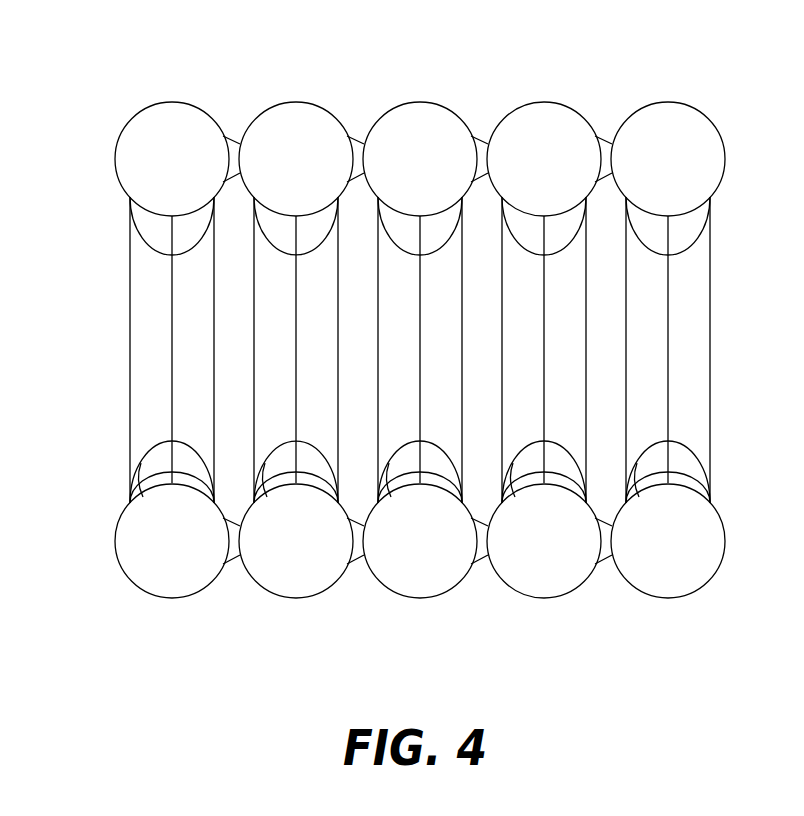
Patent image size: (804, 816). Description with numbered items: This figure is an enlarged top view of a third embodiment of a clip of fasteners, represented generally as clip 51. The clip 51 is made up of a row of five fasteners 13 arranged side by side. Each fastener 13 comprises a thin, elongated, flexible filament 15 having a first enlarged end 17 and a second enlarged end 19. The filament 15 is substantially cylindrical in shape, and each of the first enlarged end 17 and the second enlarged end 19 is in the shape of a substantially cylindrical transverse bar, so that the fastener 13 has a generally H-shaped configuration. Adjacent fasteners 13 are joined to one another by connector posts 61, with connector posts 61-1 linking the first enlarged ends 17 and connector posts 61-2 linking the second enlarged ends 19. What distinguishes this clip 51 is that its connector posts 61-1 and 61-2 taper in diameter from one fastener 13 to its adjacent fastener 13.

The fastener 13 is at (572, 92).
The filament 15 is at (140, 353).
The first enlarged end 17 is at (298, 135).
The second enlarged end 19 is at (302, 577).
The clip 51 is at (371, 348).
The connector post 61 is at (607, 575).
The connector post 61-1 is at (237, 143).
The connector post 61-2 is at (235, 560).